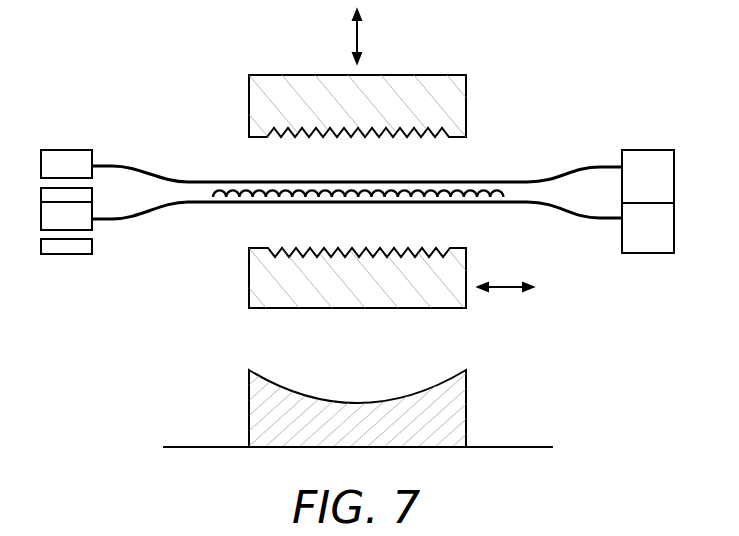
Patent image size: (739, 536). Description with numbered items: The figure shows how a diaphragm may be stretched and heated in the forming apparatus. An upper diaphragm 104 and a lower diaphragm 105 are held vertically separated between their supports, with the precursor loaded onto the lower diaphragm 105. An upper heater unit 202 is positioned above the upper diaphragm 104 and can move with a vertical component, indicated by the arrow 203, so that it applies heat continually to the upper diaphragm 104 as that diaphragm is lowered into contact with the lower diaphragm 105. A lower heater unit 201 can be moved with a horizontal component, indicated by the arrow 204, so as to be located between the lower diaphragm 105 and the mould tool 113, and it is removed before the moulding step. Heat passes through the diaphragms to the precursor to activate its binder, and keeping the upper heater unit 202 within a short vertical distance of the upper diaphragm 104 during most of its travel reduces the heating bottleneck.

The upper diaphragm 104 is at (553, 175).
The lower diaphragm 105 is at (555, 208).
The mould tool 113 is at (467, 405).
The lower heater unit 201 is at (248, 289).
The upper heater unit 202 is at (248, 88).
The vertical movement of the upper heater unit 203 is at (360, 33).
The horizontal movement of the lower heater unit 204 is at (505, 292).